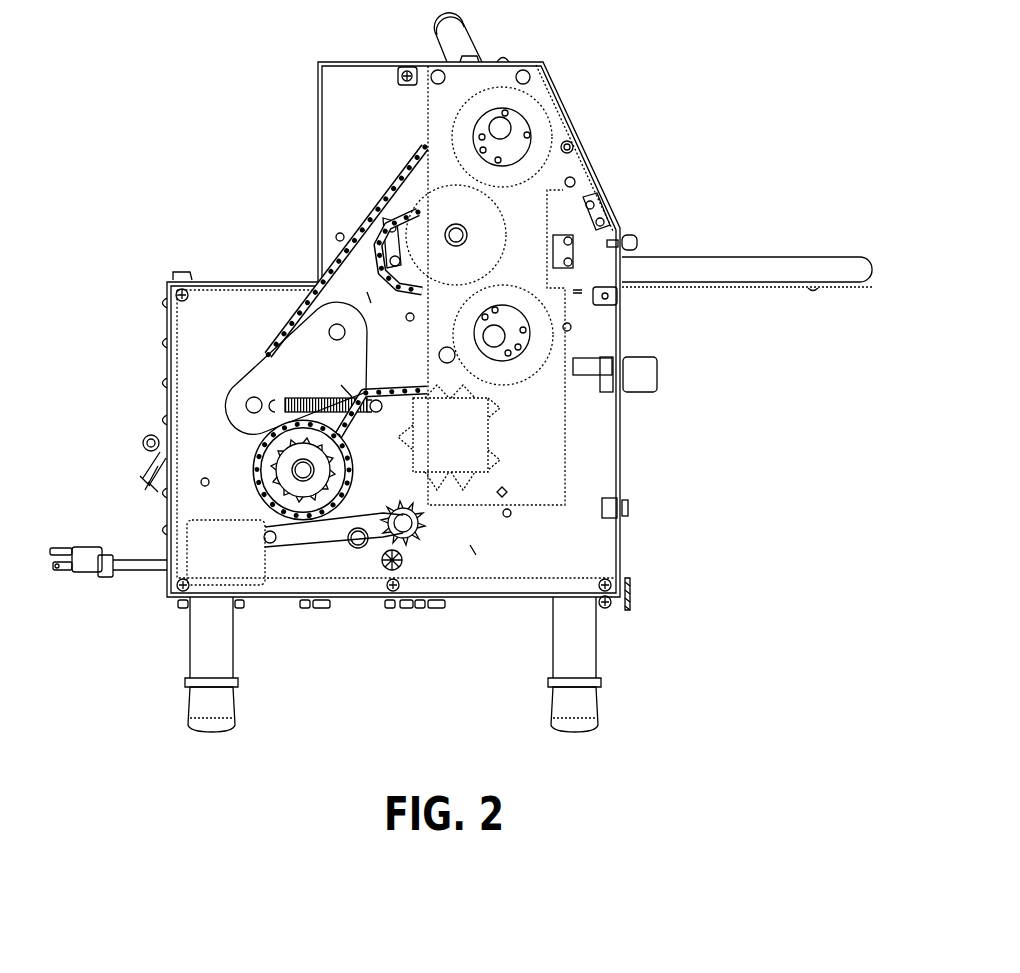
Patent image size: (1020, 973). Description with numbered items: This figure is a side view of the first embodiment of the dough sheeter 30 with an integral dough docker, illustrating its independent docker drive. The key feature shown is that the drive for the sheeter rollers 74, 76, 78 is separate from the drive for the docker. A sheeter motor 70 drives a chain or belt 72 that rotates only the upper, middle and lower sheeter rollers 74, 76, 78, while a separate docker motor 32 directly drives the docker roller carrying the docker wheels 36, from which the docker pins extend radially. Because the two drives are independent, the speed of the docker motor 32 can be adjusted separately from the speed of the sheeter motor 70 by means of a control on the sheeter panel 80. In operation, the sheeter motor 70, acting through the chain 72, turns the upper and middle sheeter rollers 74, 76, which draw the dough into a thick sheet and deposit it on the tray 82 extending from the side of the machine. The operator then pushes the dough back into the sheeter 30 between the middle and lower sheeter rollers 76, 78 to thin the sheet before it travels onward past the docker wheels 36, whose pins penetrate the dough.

The sheeter 30 is at (276, 68).
The docker motor 32 is at (480, 395).
The docker wheels 36 is at (503, 421).
The sheeter motor 70 is at (278, 467).
The chain or belt 72 is at (297, 312).
The upper sheeter roller 74 is at (541, 107).
The middle sheeter roller 76 is at (511, 236).
The lower sheeter roller 78 is at (523, 289).
The sheeter panel 80 is at (628, 482).
The tray 82 is at (747, 257).